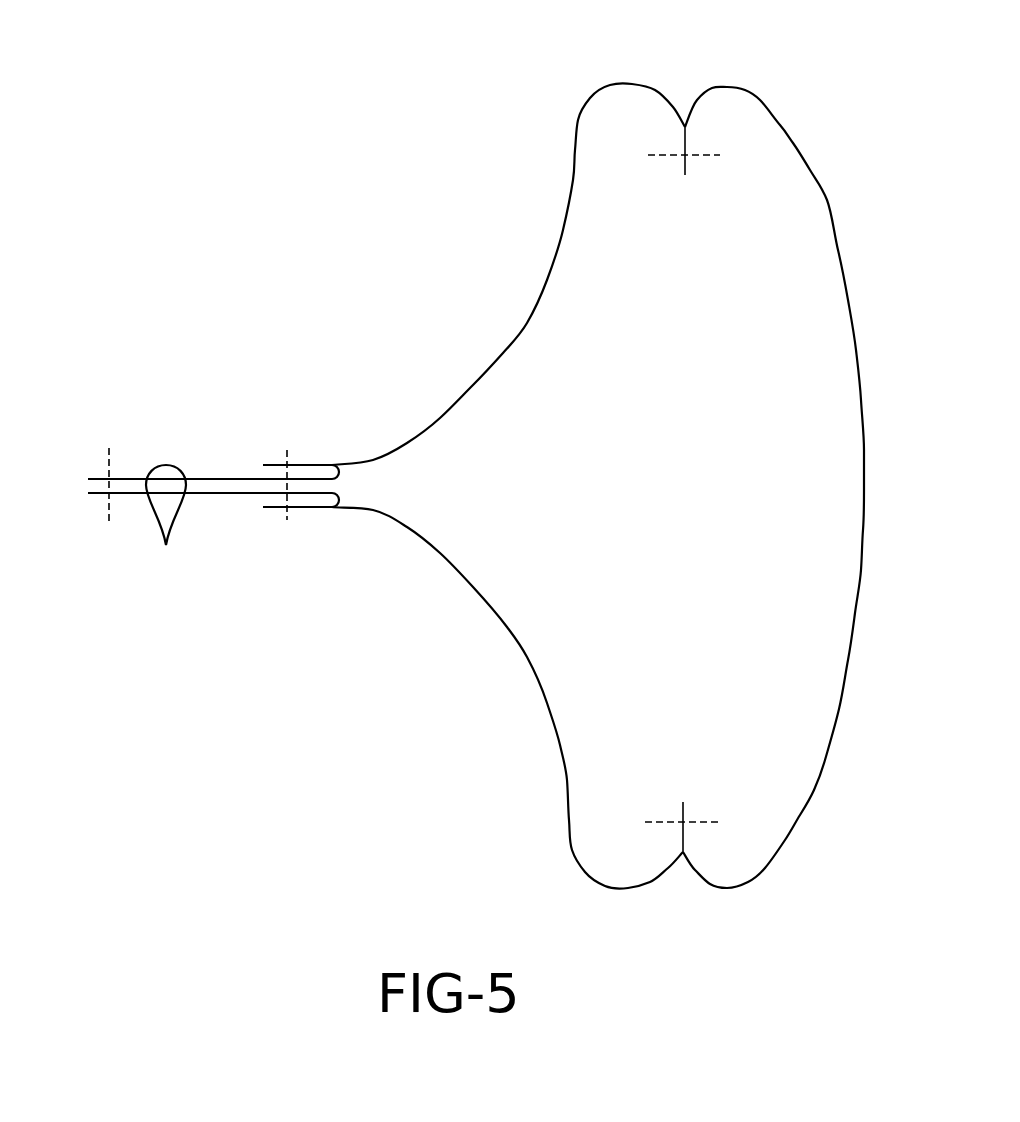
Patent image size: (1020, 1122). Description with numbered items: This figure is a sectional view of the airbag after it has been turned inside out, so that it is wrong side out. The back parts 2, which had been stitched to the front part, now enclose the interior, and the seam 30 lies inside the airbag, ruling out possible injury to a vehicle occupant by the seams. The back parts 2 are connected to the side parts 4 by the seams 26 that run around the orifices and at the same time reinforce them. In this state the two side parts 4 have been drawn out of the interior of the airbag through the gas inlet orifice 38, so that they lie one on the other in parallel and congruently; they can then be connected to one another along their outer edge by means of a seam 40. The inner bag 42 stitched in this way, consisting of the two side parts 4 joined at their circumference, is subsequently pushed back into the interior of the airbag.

The back part 2 is at (503, 353).
The side part 4 is at (166, 523).
The seam 26 is at (288, 464).
The seam 30 is at (685, 113).
The gas inlet orifice 38 is at (263, 474).
The seam 40 is at (108, 495).
The inner bag 42 is at (122, 471).